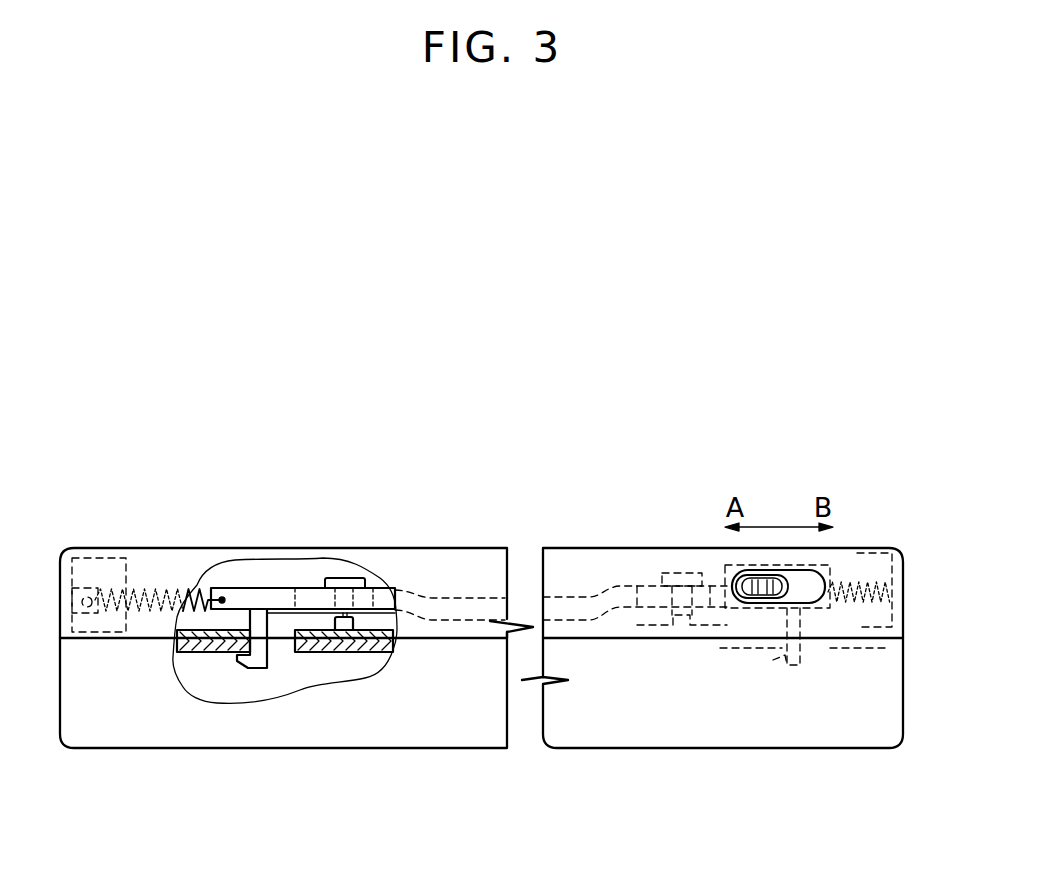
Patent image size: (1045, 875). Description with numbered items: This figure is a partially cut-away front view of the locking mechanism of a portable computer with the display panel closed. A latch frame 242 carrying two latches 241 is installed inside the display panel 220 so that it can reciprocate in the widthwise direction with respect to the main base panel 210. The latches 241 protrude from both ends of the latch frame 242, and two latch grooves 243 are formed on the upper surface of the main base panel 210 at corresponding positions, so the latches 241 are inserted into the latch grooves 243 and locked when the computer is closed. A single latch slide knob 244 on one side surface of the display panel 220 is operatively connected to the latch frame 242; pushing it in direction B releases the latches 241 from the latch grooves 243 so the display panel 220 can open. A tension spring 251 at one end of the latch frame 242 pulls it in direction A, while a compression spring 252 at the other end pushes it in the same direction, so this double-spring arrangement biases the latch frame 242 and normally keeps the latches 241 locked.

The main base panel 210 is at (481, 730).
The display panel 220 is at (472, 548).
The latch 241 is at (250, 670).
The latch frame 242 is at (385, 588).
The latch groove 243 is at (280, 652).
The latch slide knob 244 is at (740, 578).
The tension spring 251 is at (196, 590).
The compression spring 252 is at (878, 584).